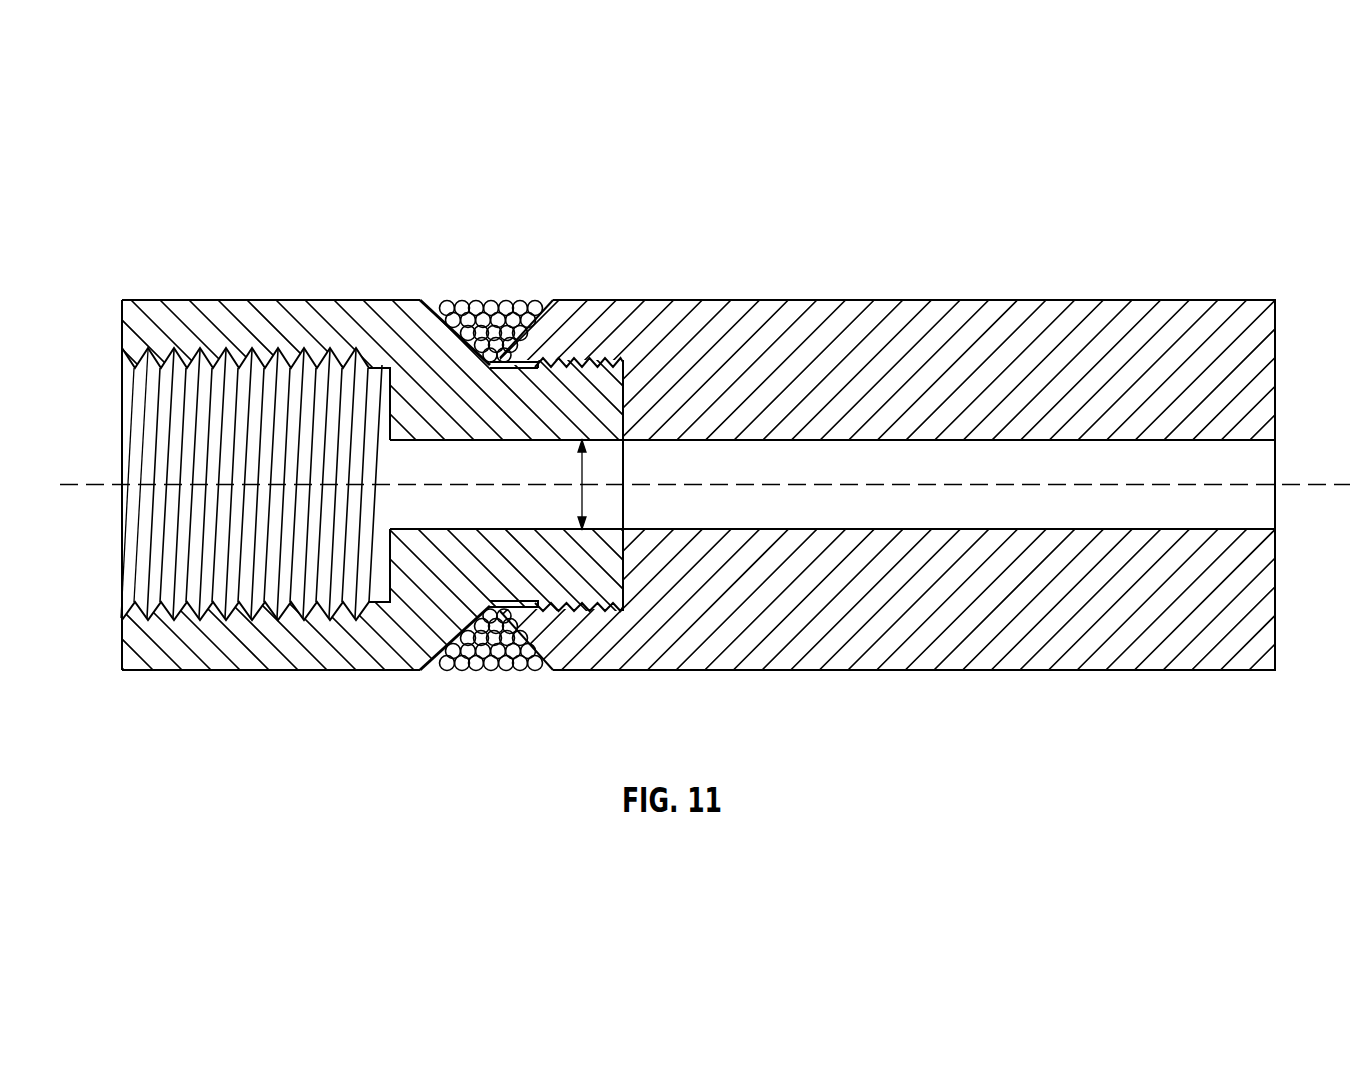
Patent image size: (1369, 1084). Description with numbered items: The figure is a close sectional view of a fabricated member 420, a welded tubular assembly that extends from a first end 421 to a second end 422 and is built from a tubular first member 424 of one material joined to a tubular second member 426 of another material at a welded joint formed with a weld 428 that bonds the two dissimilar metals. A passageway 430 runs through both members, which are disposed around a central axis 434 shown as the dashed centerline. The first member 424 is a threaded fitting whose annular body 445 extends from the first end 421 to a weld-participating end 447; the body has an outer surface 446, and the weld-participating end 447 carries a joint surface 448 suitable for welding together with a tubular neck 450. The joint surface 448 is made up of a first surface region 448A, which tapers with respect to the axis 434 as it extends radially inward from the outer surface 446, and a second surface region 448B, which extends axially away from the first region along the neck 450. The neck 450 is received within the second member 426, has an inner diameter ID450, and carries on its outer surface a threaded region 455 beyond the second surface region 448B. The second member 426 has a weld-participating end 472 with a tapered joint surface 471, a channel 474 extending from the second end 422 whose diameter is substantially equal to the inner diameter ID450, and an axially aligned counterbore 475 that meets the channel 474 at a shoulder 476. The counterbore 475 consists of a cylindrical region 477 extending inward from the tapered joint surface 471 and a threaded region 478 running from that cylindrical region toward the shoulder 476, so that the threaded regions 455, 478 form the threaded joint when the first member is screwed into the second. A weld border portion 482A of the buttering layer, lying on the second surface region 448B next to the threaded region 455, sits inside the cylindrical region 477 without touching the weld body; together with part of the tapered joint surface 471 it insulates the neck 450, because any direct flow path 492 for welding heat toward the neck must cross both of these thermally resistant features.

The fabricated member 420 is at (155, 315).
The first end 421 is at (140, 312).
The second end 422 is at (1277, 346).
The tubular first member 424 is at (190, 315).
The tubular second member 426 is at (903, 300).
The weld 428 is at (493, 300).
The passageway 430 is at (140, 537).
The central axis 434 is at (1140, 484).
The annular body 445 is at (218, 315).
The outer surface 446 is at (283, 300).
The weld-participating end 447 is at (623, 361).
The joint surface 448 is at (443, 308).
The first surface region 448A is at (480, 366).
The second surface region 448B is at (503, 375).
The neck 450 is at (577, 393).
The inner diameter of neck ID450 is at (582, 500).
The threaded region 455 is at (588, 356).
The tapered joint surface 471 is at (570, 312).
The weld-participating end 472 is at (520, 308).
The channel 474 is at (1277, 504).
The counterbore 475 is at (587, 612).
The shoulder 476 is at (623, 585).
The cylindrical region 477 is at (531, 578).
The threaded region 478 is at (570, 610).
The weld border portion 482A is at (535, 598).
The direct flow path 492 is at (516, 592).